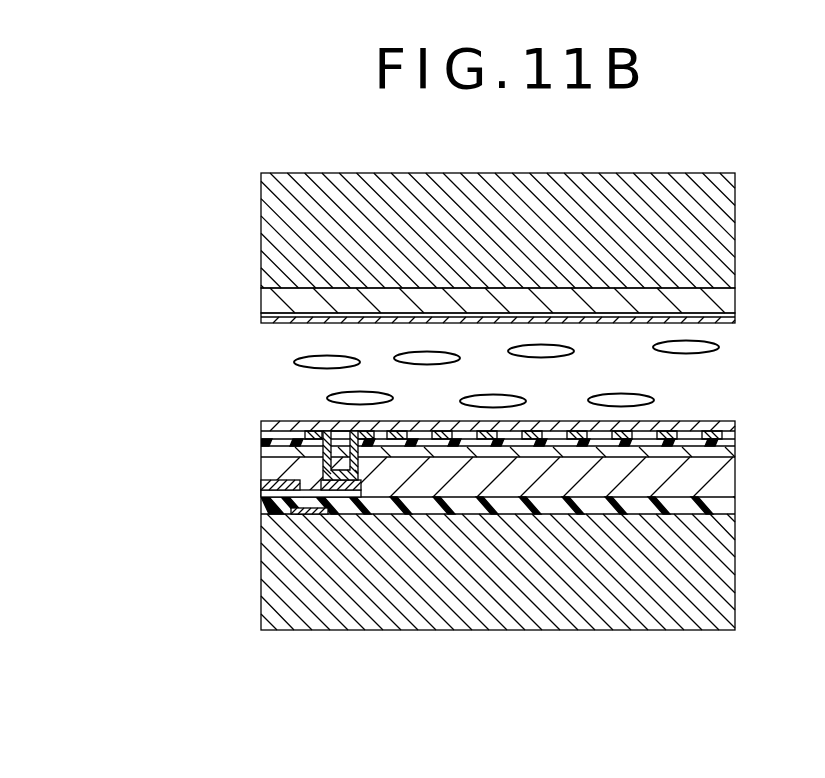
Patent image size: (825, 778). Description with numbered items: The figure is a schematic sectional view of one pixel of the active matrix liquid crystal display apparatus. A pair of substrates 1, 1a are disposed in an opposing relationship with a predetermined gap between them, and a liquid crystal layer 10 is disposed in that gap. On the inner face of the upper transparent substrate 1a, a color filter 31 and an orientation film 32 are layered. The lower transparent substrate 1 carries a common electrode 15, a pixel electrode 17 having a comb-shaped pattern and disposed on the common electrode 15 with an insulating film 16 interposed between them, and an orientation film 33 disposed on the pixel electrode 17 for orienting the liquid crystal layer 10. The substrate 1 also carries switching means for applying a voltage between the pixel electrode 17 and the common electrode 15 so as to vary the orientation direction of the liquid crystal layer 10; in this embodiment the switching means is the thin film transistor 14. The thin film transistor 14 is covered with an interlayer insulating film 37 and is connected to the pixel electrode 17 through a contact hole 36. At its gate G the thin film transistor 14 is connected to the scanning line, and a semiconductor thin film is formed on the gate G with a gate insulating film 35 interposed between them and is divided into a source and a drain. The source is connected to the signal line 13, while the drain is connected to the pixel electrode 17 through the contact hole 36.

The transparent substrate 1a is at (268, 235).
The color filter 31 is at (268, 300).
The orientation film 32 is at (278, 323).
The liquid crystal layer 10 is at (643, 397).
The orientation film 33 is at (308, 424).
The pixel electrode 17 is at (318, 436).
The insulating film 16 is at (284, 443).
The common electrode 15 is at (570, 452).
The interlayer insulating film 37 is at (727, 477).
The signal line 13 is at (284, 473).
The thin film transistor 14 is at (324, 515).
The gate insulating film 35 is at (272, 506).
The contact hole 36 is at (383, 466).
The transparent substrate 1 is at (272, 588).
The gate G is at (312, 515).